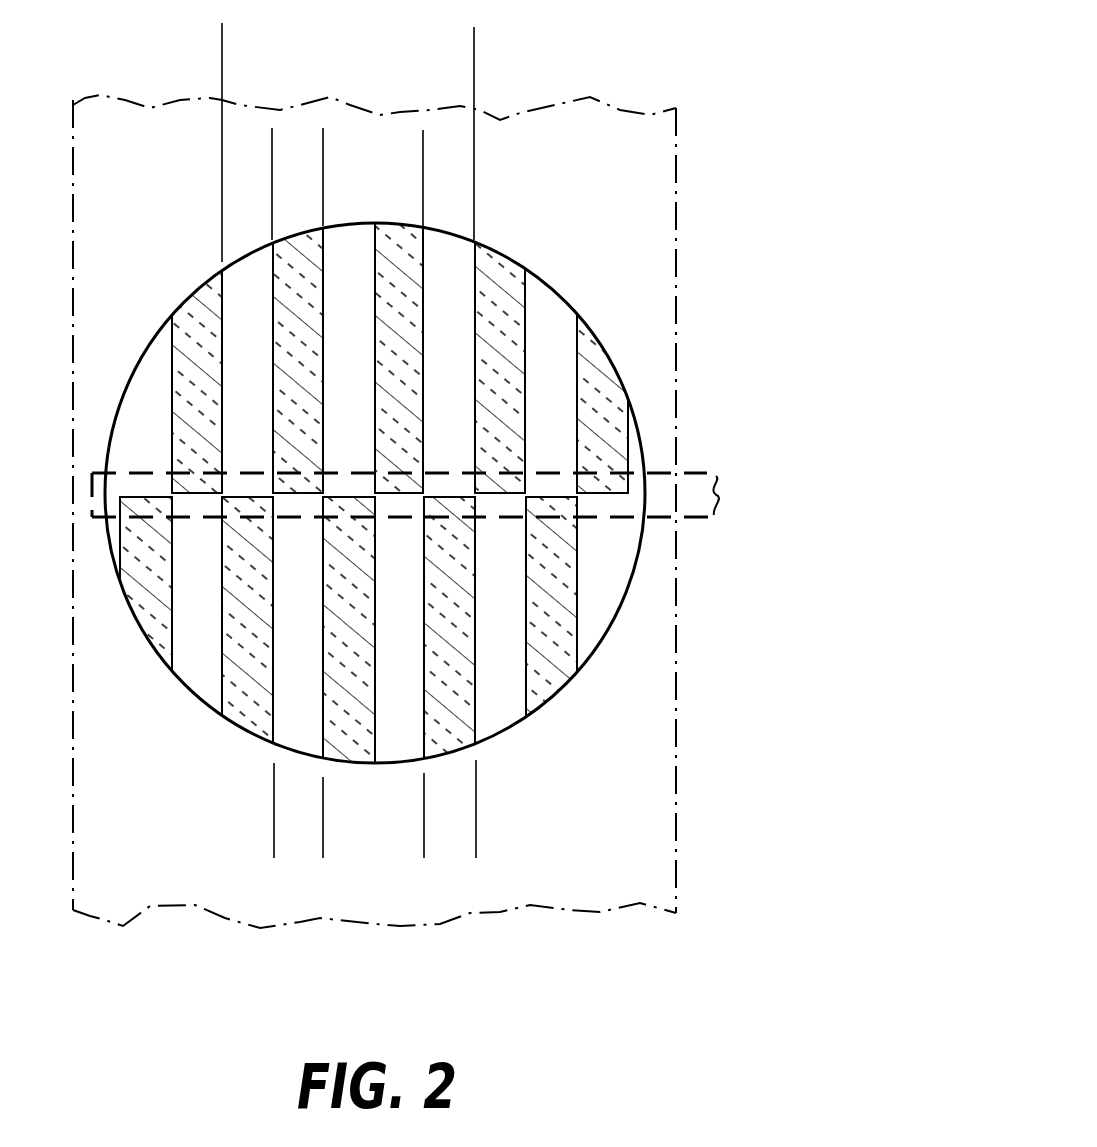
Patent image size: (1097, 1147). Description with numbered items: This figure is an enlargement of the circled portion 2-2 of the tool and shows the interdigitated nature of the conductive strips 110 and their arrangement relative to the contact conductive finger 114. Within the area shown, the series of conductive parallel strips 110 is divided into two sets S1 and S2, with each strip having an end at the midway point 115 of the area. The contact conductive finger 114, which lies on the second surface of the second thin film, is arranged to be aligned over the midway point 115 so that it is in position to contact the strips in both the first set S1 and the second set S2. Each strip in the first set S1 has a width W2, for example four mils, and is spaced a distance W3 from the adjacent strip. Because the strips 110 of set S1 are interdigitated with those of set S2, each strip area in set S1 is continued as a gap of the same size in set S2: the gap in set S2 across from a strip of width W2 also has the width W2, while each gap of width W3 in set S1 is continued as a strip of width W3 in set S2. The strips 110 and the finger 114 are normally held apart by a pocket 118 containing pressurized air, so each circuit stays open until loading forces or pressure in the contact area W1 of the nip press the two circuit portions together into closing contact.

The conductive strips 110 is at (386, 716).
The contact conductive finger 114 is at (707, 458).
The midway point 115 is at (156, 484).
The pocket 118 is at (637, 832).
The first set of strips S1 is at (552, 342).
The second set of strips S2 is at (504, 665).
The nip contact area width W1 is at (474, 55).
The strip width W2 is at (232, 155).
The strip spacing W3 is at (382, 183).
The circled portion 2-2 is at (716, 142).